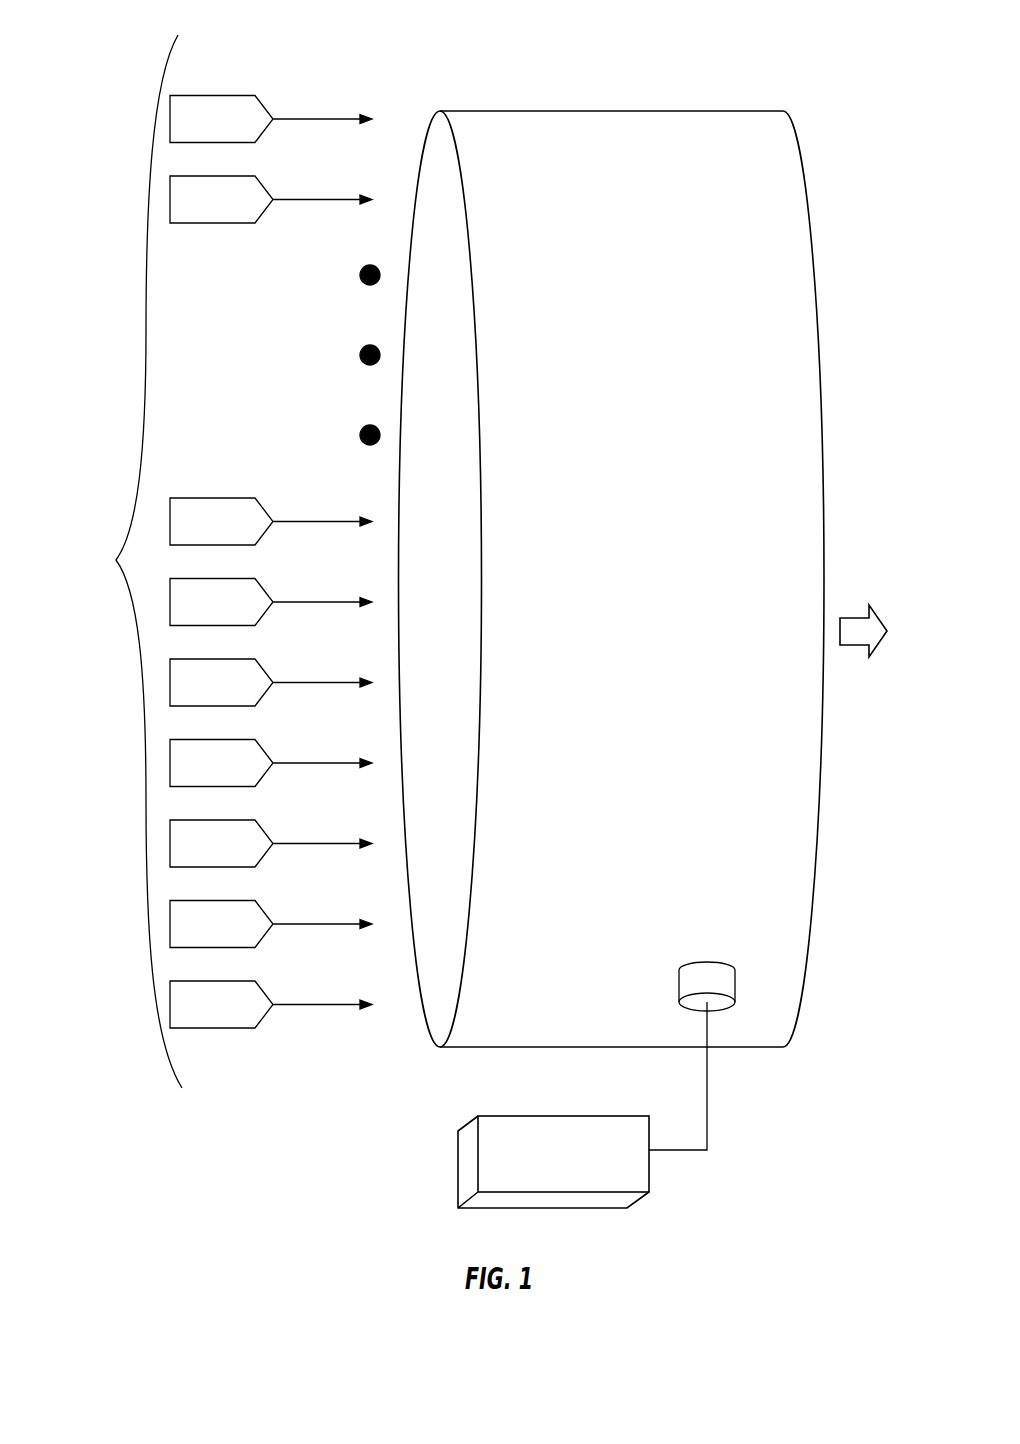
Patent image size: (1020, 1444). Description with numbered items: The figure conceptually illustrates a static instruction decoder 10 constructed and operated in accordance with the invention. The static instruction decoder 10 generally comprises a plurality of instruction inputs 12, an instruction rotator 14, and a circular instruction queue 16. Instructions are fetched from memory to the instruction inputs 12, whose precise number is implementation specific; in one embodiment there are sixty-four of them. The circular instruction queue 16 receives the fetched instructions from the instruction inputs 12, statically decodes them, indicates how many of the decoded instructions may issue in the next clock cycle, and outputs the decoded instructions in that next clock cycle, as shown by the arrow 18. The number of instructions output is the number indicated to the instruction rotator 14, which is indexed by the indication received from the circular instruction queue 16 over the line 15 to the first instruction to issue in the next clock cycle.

The static instruction decoder 10 is at (267, 27).
The instruction inputs 12 is at (116, 560).
The instruction rotator 14 is at (649, 1192).
The line 15 is at (708, 1102).
The circular instruction queue 16 is at (572, 110).
The arrow 18 is at (871, 605).